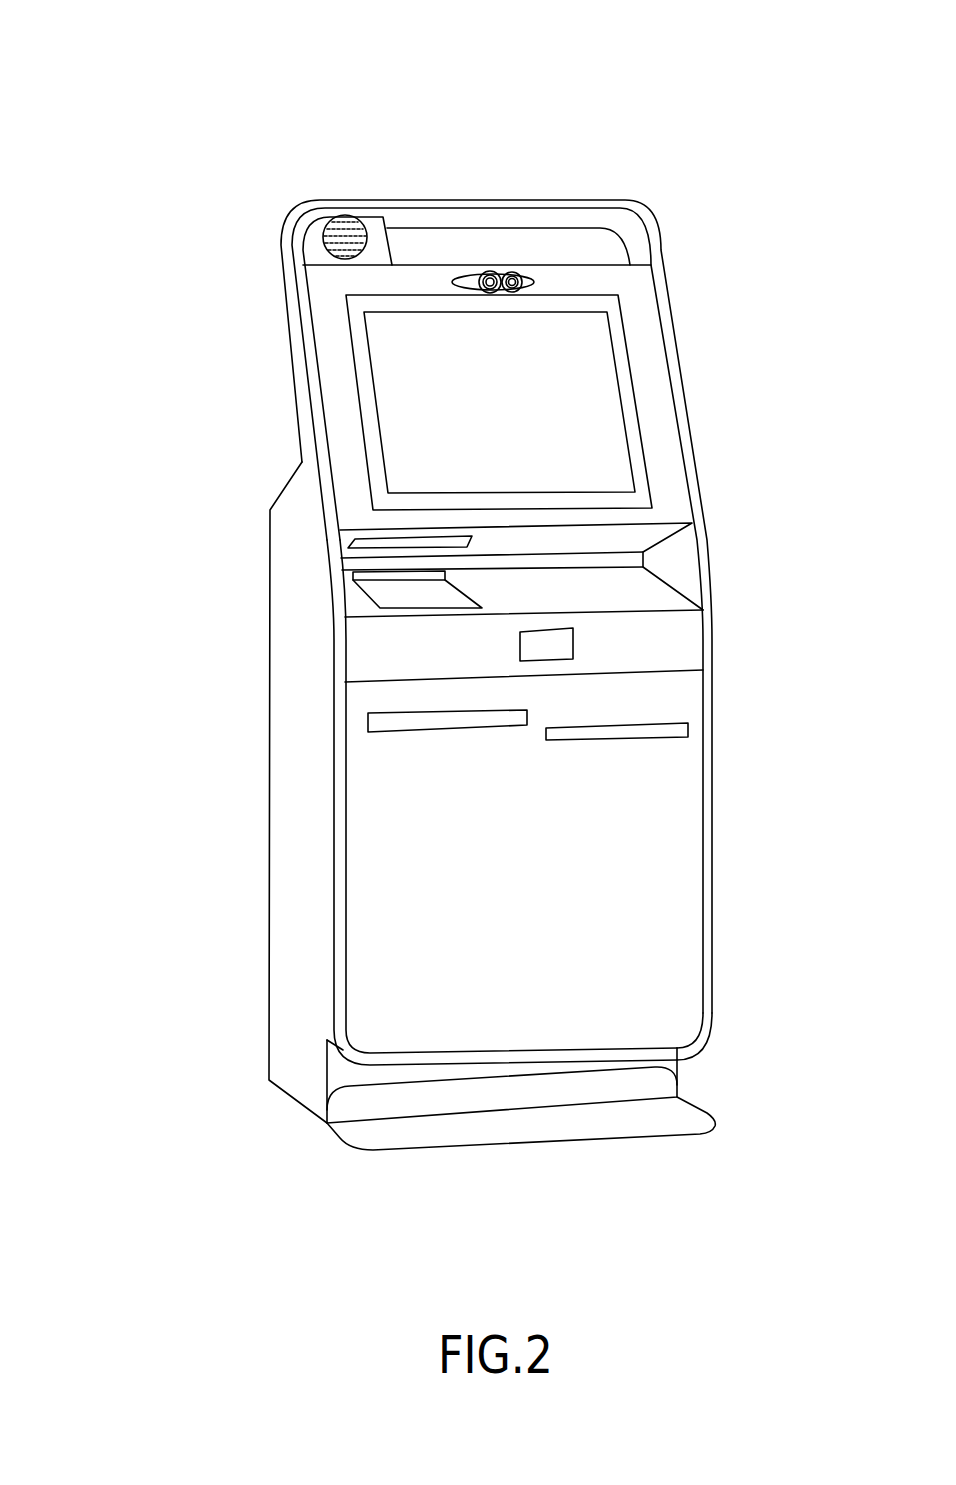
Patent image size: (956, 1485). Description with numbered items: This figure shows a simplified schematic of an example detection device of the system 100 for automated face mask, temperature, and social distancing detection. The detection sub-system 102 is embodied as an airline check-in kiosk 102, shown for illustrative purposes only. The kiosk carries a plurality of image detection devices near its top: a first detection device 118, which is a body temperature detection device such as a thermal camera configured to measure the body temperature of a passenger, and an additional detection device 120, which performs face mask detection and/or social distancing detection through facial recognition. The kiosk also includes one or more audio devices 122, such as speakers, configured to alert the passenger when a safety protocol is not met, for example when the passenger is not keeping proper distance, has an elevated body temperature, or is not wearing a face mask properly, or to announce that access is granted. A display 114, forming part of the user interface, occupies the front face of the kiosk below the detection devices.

The system 100 is at (205, 64).
The detection sub-system 102 is at (648, 228).
The display 114 is at (605, 393).
The first detection device 118 is at (512, 280).
The additional detection device 120 is at (492, 280).
The audio devices 122 is at (343, 237).